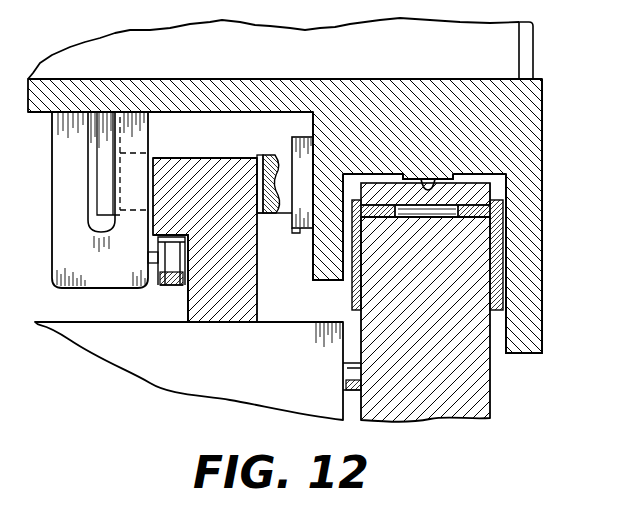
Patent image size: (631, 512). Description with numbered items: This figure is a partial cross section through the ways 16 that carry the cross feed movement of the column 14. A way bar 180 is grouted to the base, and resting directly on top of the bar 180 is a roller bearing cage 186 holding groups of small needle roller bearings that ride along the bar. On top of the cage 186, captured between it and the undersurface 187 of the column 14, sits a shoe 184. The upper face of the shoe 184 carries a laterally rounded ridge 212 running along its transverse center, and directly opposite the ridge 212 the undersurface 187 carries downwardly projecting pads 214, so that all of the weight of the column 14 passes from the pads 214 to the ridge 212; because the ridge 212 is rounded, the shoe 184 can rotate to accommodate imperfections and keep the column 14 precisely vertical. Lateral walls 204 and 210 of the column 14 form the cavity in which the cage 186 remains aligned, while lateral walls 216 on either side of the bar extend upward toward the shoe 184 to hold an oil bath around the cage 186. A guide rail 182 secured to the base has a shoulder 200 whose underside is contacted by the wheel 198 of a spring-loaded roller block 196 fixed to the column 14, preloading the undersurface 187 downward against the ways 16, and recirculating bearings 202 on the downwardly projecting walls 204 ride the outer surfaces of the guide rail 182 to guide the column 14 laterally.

The column 14 is at (375, 63).
The ways 16 is at (312, 187).
The way bar 180 is at (492, 390).
The guide rail 182 is at (228, 157).
The shoe 184 is at (381, 194).
The roller bearing cage 186 is at (412, 220).
The undersurface 187 is at (508, 193).
The roller block 196 is at (164, 286).
The wheel 198 is at (181, 282).
The shoulder 200 is at (176, 236).
The recirculating bearing 202 is at (262, 181).
The downwardly projecting wall 204 is at (329, 182).
The lateral wall 210 is at (532, 275).
The ridge 212 is at (432, 180).
The pad 214 is at (427, 181).
The lateral wall 216 is at (503, 250).